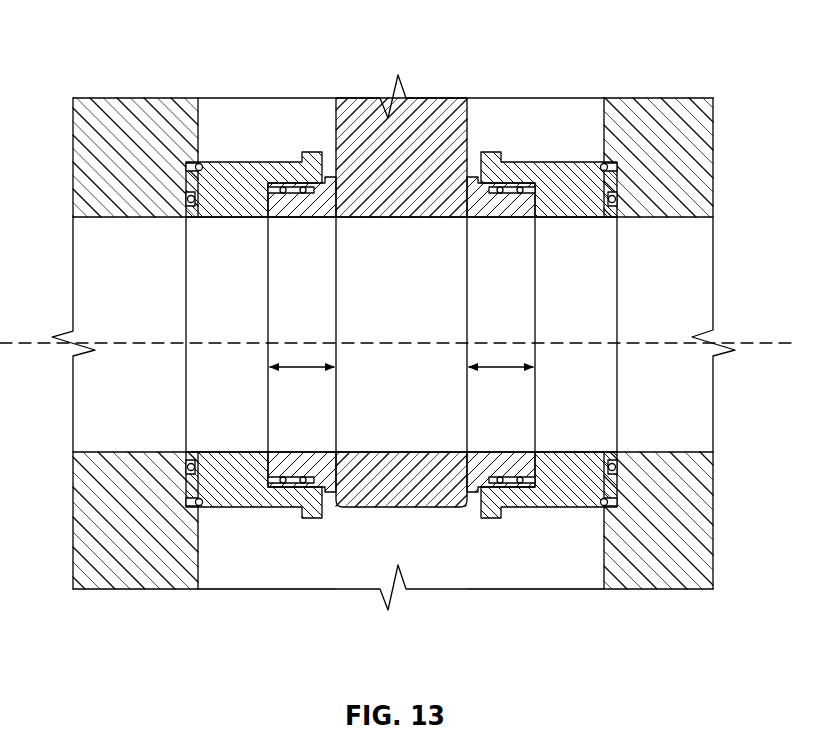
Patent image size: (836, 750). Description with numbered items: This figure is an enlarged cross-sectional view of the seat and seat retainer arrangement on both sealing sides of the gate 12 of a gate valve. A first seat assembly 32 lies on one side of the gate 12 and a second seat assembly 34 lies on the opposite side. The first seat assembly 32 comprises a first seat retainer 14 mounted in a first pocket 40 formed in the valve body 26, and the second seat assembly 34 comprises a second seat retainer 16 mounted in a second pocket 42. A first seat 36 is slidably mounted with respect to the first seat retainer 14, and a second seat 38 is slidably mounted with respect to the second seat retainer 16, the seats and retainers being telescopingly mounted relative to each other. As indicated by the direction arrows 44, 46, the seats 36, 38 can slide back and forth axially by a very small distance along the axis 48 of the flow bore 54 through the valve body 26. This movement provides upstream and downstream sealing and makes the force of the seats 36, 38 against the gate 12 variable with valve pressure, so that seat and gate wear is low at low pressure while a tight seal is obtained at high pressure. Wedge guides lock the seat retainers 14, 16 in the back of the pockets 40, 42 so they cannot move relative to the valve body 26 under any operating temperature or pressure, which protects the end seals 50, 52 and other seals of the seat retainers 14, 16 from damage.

The gate 12 is at (418, 155).
The first seat retainer 14 is at (268, 507).
The second seat retainer 16 is at (553, 492).
The valve body 26 is at (88, 141).
The first seat assembly 32 is at (264, 549).
The second seat assembly 34 is at (556, 549).
The first seat 36 is at (296, 218).
The second seat 38 is at (493, 218).
The first pocket 40 is at (182, 186).
The second pocket 42 is at (620, 181).
The direction arrow 44 is at (308, 372).
The direction arrow 46 is at (507, 372).
The axis 48 is at (792, 343).
The end seal 50 is at (184, 466).
The end seal 52 is at (614, 465).
The flow bore 54 is at (88, 288).